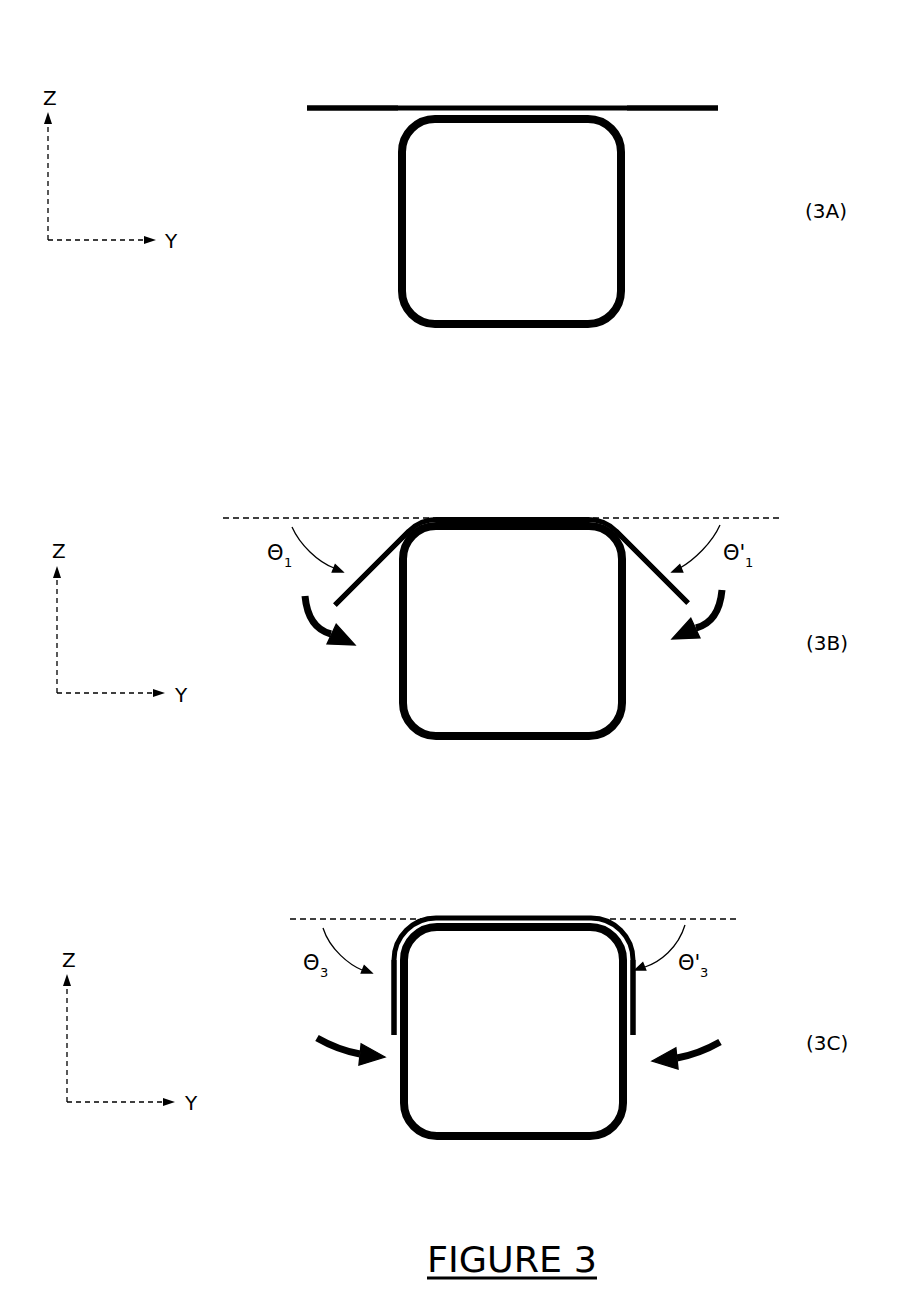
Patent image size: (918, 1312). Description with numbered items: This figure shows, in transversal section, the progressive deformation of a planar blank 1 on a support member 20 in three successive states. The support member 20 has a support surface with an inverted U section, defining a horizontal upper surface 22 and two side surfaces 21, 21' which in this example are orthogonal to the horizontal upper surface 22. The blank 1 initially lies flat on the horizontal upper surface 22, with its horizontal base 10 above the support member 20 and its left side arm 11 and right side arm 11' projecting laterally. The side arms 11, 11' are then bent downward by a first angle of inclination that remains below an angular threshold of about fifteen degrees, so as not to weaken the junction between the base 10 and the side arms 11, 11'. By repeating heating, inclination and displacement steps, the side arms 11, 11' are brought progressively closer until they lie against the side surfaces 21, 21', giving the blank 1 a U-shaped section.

The blank 1 is at (459, 77).
The horizontal base 10 is at (530, 107).
The left side arm 11 is at (356, 533).
The right side arm 11' is at (669, 532).
The support member 20 is at (524, 233).
The side surface 21 is at (512, 643).
The side surface 21' is at (514, 641).
The horizontal upper surface 22 is at (512, 122).